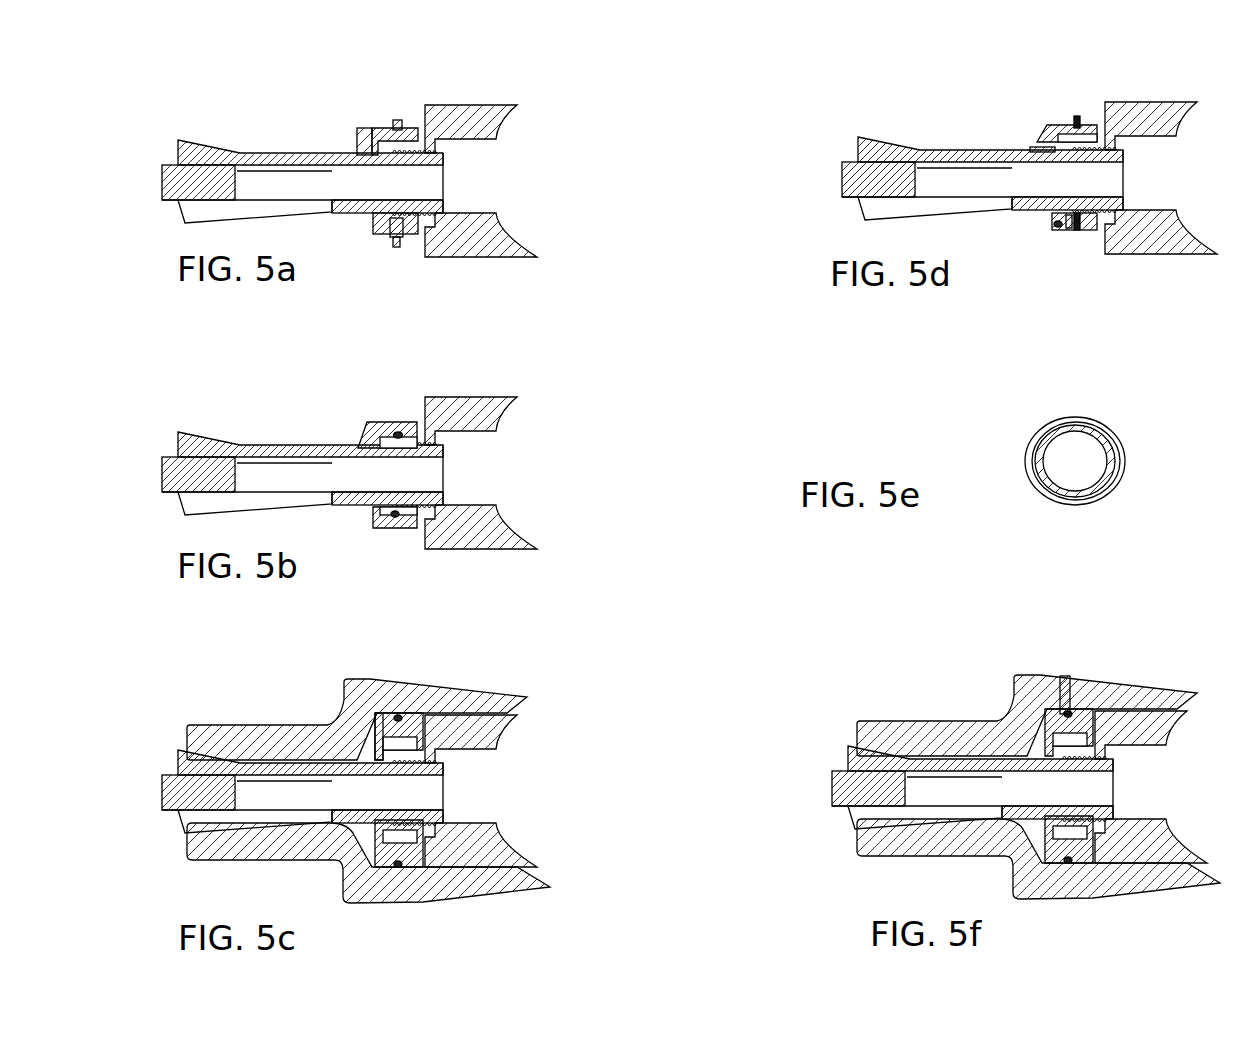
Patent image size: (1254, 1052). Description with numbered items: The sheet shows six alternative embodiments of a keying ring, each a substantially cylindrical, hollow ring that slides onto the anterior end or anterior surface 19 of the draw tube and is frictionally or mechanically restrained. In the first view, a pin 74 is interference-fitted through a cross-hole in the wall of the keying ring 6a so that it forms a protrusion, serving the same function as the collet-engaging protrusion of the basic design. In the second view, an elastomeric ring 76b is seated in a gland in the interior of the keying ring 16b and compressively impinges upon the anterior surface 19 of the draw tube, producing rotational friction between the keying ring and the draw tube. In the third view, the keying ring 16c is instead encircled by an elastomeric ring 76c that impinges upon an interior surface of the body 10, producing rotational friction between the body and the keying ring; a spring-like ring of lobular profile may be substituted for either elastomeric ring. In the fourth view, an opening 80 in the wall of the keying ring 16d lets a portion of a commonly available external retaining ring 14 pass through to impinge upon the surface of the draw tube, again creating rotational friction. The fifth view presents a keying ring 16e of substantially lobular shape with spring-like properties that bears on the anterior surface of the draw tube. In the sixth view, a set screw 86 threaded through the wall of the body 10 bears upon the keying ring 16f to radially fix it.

In FIG. 5A, the keying ring 6a is at (375, 129).
In FIG. 5A, the pin 74 is at (362, 152).
In FIG. 5D, the pin 74 is at (1040, 148).
In FIG. 5B, the elastomeric ring 76b is at (378, 422).
In FIG. 5B, the keying ring 16b is at (392, 420).
In FIG. 5B, the anterior surface of the draw tube 19 is at (403, 432).
In FIG. 5D, the anterior surface of the draw tube 19 is at (1058, 228).
In FIG. 5E, the anterior surface of the draw tube 19 is at (1043, 489).
In FIG. 5C, the body 10 is at (470, 697).
In FIG. 5F, the body 10 is at (1120, 690).
In FIG. 5C, the elastomeric ring 76c is at (404, 711).
In FIG. 5C, the keying ring 16c is at (376, 718).
In FIG. 5D, the keying ring 16d is at (1052, 126).
In FIG. 5D, the external retaining ring 14 is at (1077, 232).
In FIG. 5D, the opening 80 is at (1072, 232).
In FIG. 5E, the keying ring 16e is at (1038, 440).
In FIG. 5F, the keying ring 16f is at (1047, 718).
In FIG. 5F, the set screw 86 is at (1068, 678).